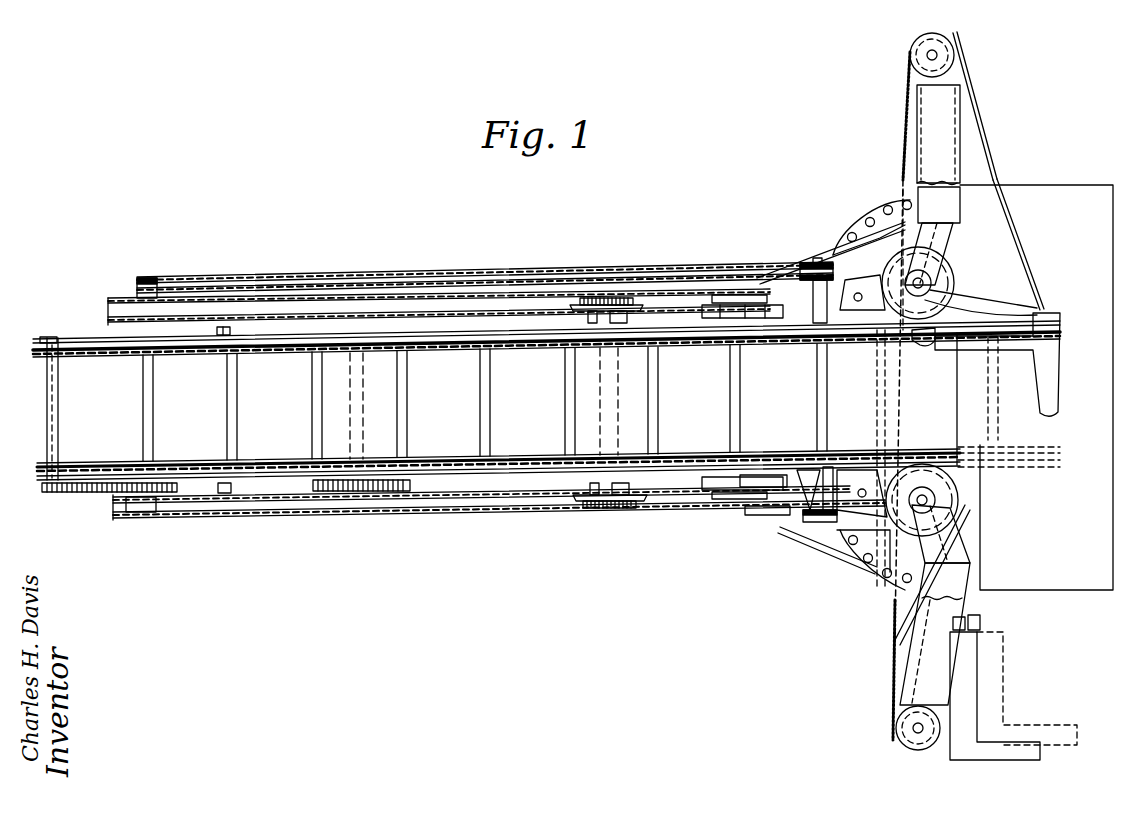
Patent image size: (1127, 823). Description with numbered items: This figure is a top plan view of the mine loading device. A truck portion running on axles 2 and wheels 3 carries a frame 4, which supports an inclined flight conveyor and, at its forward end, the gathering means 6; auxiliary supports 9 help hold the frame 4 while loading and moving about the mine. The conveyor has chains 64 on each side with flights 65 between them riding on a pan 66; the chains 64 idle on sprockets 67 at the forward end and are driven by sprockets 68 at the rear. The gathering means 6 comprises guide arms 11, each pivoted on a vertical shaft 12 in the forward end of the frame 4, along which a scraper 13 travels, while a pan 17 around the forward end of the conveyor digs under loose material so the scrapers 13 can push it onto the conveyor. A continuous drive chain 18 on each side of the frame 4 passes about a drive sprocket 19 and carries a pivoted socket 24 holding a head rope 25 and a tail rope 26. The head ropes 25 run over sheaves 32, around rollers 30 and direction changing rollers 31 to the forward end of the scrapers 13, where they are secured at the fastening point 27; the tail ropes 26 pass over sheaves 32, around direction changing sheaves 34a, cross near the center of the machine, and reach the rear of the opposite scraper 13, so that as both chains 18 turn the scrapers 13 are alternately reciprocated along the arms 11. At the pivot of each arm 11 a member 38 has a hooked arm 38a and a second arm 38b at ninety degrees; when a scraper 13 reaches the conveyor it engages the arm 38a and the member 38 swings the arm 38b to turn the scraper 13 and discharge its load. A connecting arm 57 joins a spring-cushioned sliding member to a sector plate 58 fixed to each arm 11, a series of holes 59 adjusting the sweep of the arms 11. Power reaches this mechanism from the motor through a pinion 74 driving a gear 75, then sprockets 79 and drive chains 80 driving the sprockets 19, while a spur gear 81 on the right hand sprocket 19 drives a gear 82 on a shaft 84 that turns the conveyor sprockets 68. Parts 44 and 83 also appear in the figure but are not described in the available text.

The axle 2 is at (600, 378).
The wheel 3 is at (380, 305).
The frame 4 is at (645, 504).
The gathering means 6 is at (978, 140).
The auxiliary support 9 is at (230, 331).
The guide arm 11 is at (975, 100).
The vertical shaft 12 is at (955, 283).
The scraper 13 is at (1060, 370).
The pan 17 is at (1076, 592).
The drive chain 18 is at (515, 506).
The sprocket 19 is at (108, 300).
The socket 24 is at (157, 279).
The head rope 25 is at (778, 275).
The tail rope 26 is at (903, 146).
The head rope fastening point 27 is at (985, 622).
The roller 30 is at (806, 258).
The direction changing roller 31 is at (955, 272).
The sheave 32 is at (828, 477).
The pulley 34a is at (910, 53).
The member 38 is at (1010, 300).
The arm 38a is at (928, 343).
The arm 38b is at (1045, 300).
The box 44 is at (767, 478).
The connecting arm 57 is at (808, 250).
The sector plate 58 is at (872, 586).
The series of holes 59 is at (882, 590).
The chain 64 is at (448, 460).
The flight 65 is at (565, 408).
The pan 66 is at (262, 428).
The sprocket 67 is at (1060, 450).
The sprocket 68 is at (73, 466).
The pinion 74 is at (318, 520).
The gear 75 is at (370, 520).
The sprocket 79 is at (108, 503).
The drive chain 80 is at (175, 519).
The spur gear 81 is at (143, 519).
The gear 82 is at (90, 494).
The rack 83 is at (53, 494).
The shaft 84 is at (48, 440).